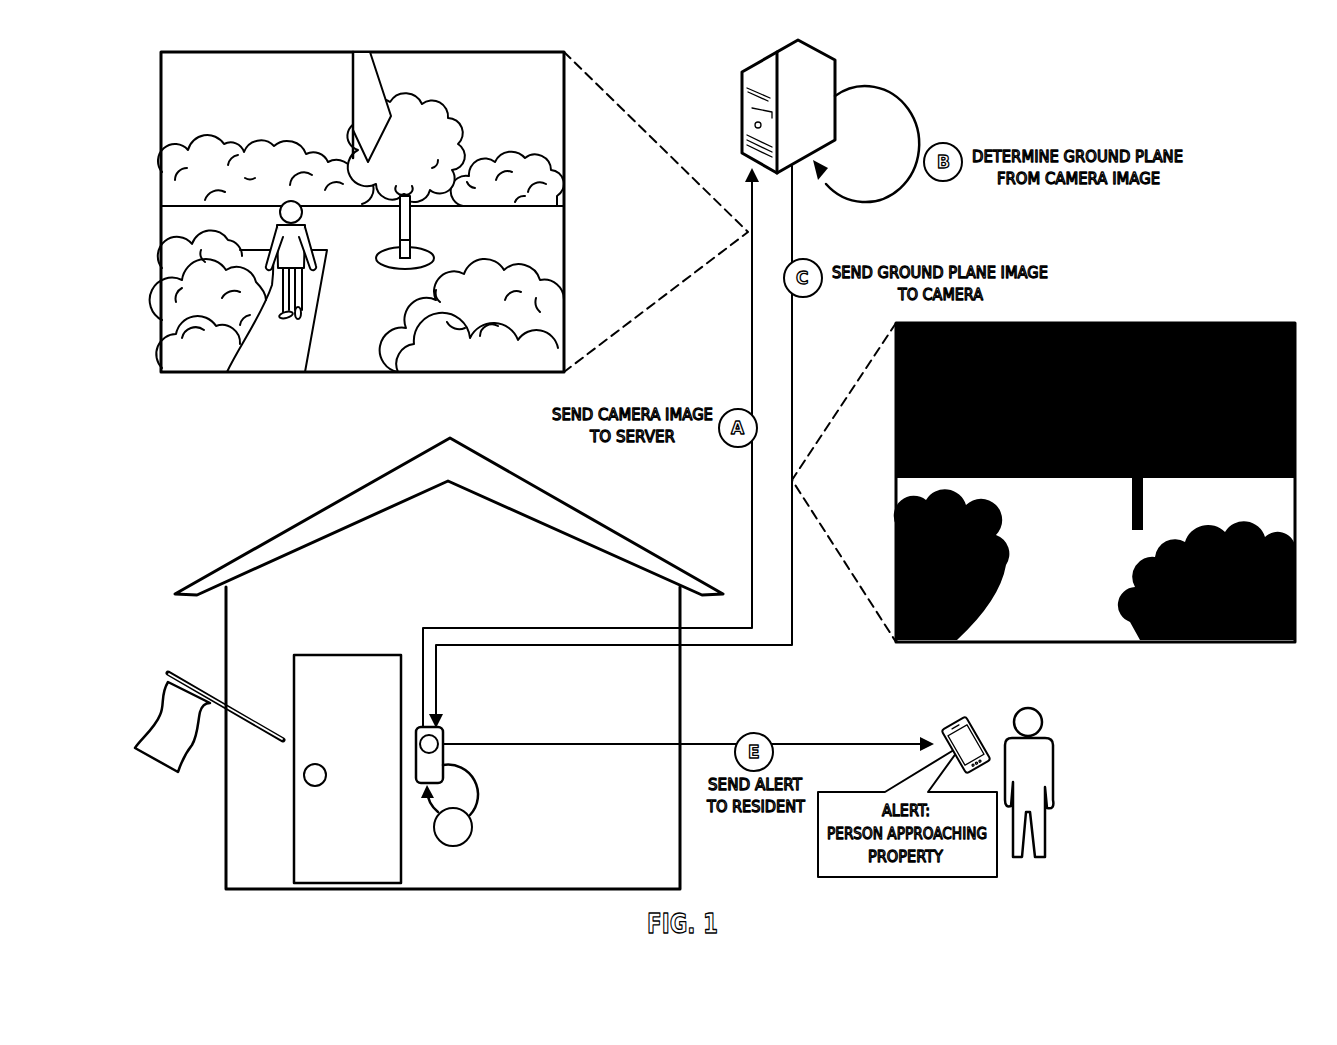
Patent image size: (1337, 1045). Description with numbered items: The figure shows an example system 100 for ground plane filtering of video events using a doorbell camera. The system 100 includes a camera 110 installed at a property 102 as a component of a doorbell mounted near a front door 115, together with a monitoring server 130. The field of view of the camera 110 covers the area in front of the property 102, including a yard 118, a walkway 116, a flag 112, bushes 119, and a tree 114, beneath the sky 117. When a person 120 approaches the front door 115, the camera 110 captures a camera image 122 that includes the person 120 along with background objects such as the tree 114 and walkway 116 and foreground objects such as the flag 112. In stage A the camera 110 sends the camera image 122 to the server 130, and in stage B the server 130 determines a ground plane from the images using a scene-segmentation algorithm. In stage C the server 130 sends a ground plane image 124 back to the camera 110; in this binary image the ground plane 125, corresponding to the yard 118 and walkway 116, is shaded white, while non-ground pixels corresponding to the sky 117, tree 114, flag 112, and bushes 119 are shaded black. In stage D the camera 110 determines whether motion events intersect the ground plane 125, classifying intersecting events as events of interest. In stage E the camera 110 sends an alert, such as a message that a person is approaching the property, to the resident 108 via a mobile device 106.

The system 100 is at (720, 33).
The property 102 is at (626, 536).
The mobile device 106 is at (950, 724).
The resident 108 is at (1055, 752).
The camera 110 is at (447, 730).
The flag 112 is at (352, 87).
The tree 114 is at (450, 115).
The front door 115 is at (293, 688).
The walkway 116 is at (312, 346).
The sky 117 is at (201, 83).
The yard 118 is at (546, 235).
The bushes 119 is at (497, 263).
The person 120 is at (308, 243).
The camera image 122 is at (413, 52).
The ground plane image 124 is at (1119, 323).
The ground plane 125 is at (1089, 528).
The monitoring server 130 is at (836, 70).